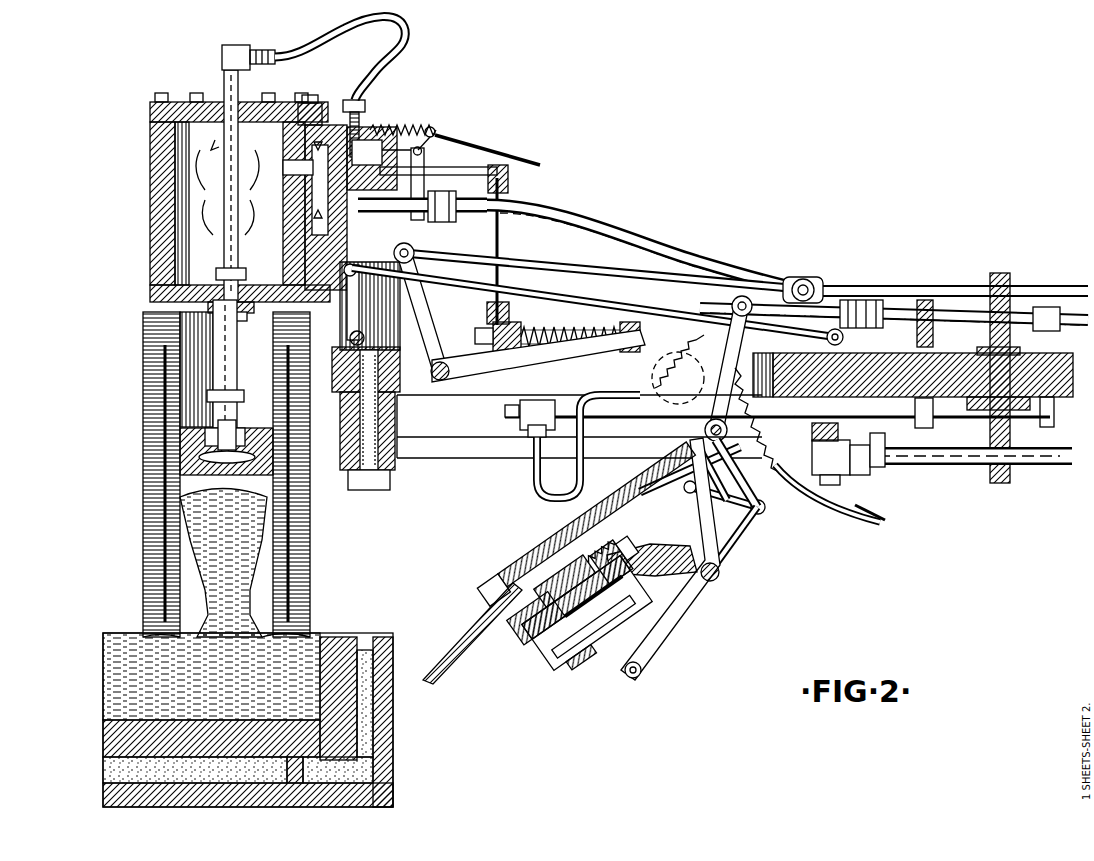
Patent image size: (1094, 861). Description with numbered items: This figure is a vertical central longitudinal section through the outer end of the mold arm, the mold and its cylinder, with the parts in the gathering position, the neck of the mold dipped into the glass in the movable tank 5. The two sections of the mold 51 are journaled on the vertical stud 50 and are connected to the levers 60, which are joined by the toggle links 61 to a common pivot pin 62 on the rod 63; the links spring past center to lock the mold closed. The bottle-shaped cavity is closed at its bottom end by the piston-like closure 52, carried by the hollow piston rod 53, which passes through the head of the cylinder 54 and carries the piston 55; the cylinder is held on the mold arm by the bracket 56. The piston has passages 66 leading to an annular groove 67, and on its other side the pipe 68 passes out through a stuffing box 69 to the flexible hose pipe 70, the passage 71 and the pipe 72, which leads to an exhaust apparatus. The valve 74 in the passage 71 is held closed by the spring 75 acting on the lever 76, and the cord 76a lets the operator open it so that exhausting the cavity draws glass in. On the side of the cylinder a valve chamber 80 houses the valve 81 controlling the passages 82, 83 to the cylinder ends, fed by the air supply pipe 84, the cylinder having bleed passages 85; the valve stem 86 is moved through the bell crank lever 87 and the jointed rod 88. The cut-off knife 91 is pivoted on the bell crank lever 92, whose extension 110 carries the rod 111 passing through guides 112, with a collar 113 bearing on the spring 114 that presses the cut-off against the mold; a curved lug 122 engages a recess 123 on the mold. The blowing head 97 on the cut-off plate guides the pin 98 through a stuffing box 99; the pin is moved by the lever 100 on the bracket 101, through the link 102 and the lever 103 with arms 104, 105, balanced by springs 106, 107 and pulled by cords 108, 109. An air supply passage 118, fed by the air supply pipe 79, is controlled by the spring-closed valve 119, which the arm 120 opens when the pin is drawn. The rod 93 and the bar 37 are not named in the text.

The movable tank 5 is at (395, 722).
The frame bar 37 is at (933, 373).
The vertical stud 50 is at (385, 495).
The mold 51 is at (142, 527).
The piston-like closure 52 is at (240, 428).
The piston rod 53 is at (230, 357).
The cylinder 54 is at (163, 188).
The piston 55 is at (170, 233).
The bracket 56 is at (397, 308).
The levers 60 is at (482, 443).
The toggle links 61 is at (865, 478).
The pivot pin 62 is at (835, 485).
The rod 63 is at (1043, 452).
The passages 66 is at (235, 455).
The annular groove 67 is at (237, 450).
The pipe 68 is at (226, 68).
The stuffing box 69 is at (255, 90).
The flexible hose pipe 70 is at (405, 48).
The passage 71 is at (352, 143).
The pipe 72 is at (520, 198).
The valve 74 is at (368, 128).
The spring 75 is at (410, 128).
The lever 76 is at (438, 130).
The cord 76a is at (507, 190).
The air supply pipe 79 is at (530, 487).
The valve chamber 80 is at (512, 152).
The valve 81 is at (352, 229).
The passage 82 is at (314, 150).
The passage 83 is at (291, 270).
The air supply pipe 84 is at (562, 216).
The bleed passages 85 is at (185, 100).
The valve stem 86 is at (316, 323).
The bell crank lever 87 is at (364, 270).
The jointed rod 88 is at (505, 300).
The cut-off knife 91 is at (443, 662).
The bell crank lever 92 is at (495, 365).
The rod 93 is at (871, 289).
The blowing head 97 is at (553, 618).
The pin 98 is at (617, 647).
The stuffing box 99 is at (587, 643).
The lever 100 is at (678, 608).
The bracket 101 is at (695, 549).
The link 102 is at (732, 499).
The lever 103 is at (772, 457).
The actuating arm 104 is at (708, 462).
The actuating arm 105 is at (655, 458).
The spring 106 is at (752, 405).
The spring 107 is at (697, 372).
The cord 108 is at (882, 522).
The cord 109 is at (852, 497).
The lever extension 110 is at (735, 345).
The rod 111 is at (681, 327).
The guides 112 is at (628, 322).
The collar 113 is at (604, 328).
The spring 114 is at (565, 308).
The air supply passage 118 is at (583, 592).
The spring-closed valve 119 is at (597, 568).
The arm 120 is at (727, 502).
The curved lug 122 is at (572, 535).
The recess 123 is at (292, 632).